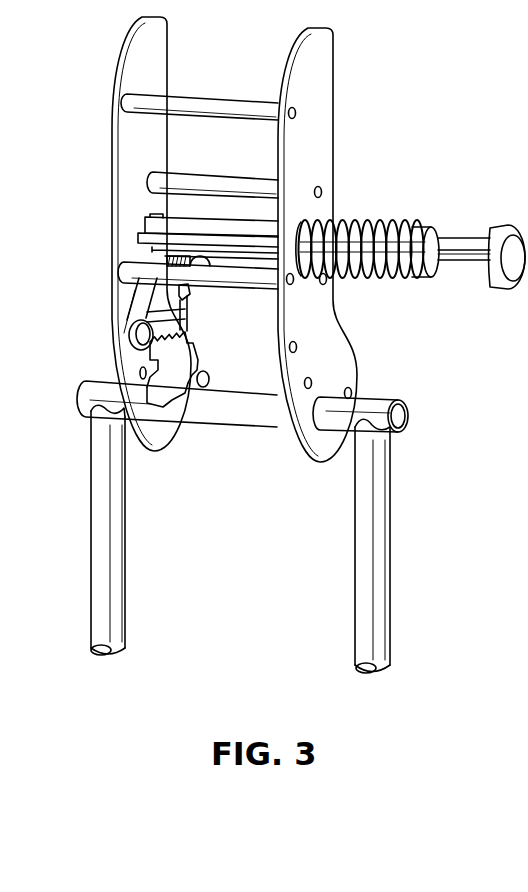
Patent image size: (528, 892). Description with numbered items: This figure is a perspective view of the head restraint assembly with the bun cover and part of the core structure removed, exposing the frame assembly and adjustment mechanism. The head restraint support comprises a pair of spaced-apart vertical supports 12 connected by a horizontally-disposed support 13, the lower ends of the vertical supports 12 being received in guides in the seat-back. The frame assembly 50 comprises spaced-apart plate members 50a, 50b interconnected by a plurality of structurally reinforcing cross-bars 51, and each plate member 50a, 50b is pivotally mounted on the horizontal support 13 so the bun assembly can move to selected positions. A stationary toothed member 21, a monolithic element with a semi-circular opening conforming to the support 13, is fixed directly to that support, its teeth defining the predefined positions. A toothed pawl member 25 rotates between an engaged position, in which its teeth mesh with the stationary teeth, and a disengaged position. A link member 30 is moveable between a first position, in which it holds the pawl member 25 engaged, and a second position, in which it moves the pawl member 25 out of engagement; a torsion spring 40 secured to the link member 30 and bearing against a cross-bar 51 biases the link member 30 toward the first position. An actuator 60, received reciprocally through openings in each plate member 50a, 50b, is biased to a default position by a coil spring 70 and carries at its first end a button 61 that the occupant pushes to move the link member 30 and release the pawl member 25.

The vertical supports 12 is at (117, 583).
The horizontally-disposed support 13 is at (253, 428).
The stationary toothed member 21 is at (172, 378).
The toothed pawl member 25 is at (127, 333).
The link member 30 is at (188, 301).
The torsion spring 40 is at (183, 253).
The frame 50 is at (327, 127).
The plate member 50a is at (322, 58).
The plate member 50b is at (135, 58).
The cross-bars 51 is at (197, 102).
The actuator 60 is at (440, 150).
The button 61 is at (490, 226).
The coil spring 70 is at (400, 225).